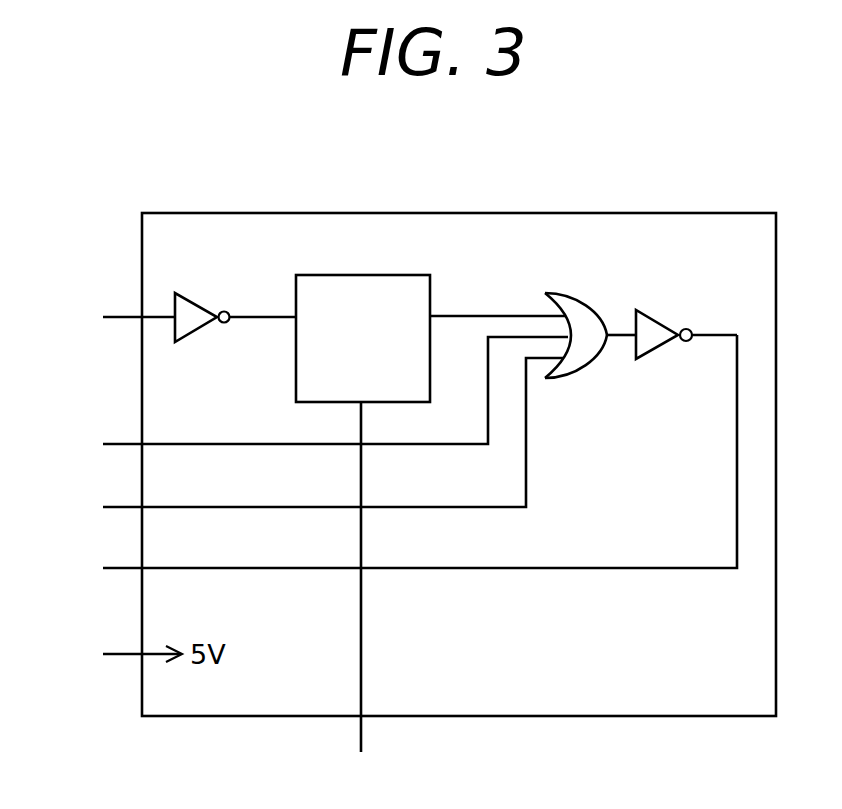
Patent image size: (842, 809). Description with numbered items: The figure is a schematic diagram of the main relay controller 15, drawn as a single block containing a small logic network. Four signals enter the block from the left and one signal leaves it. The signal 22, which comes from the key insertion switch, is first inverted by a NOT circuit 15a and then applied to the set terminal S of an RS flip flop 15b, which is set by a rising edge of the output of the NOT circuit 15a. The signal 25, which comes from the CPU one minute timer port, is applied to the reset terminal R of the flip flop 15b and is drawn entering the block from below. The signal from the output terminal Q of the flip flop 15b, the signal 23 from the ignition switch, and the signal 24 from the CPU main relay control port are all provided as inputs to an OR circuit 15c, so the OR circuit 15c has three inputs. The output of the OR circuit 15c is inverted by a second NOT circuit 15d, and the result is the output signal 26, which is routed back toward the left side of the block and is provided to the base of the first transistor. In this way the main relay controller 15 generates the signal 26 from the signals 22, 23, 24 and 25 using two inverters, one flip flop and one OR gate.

The main relay controller 15 is at (313, 213).
The NOT circuit 15a is at (200, 302).
The RS flip flop 15b is at (371, 275).
The OR circuit 15c is at (584, 304).
The NOT circuit 15d is at (665, 326).
The signal 22 is at (103, 317).
The signal 23 is at (103, 444).
The signal 24 is at (103, 507).
The signal 25 is at (363, 735).
The output signal 26 is at (103, 568).